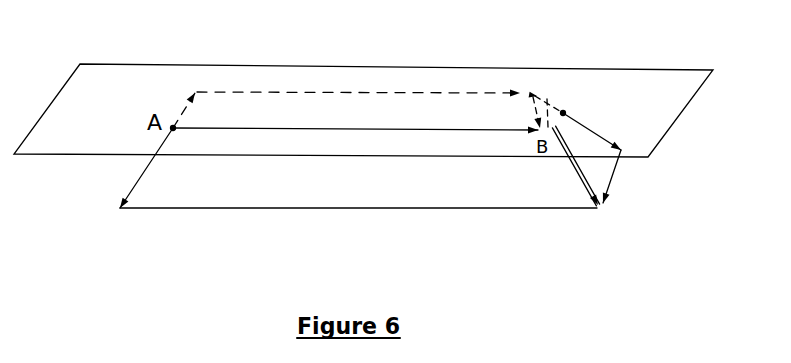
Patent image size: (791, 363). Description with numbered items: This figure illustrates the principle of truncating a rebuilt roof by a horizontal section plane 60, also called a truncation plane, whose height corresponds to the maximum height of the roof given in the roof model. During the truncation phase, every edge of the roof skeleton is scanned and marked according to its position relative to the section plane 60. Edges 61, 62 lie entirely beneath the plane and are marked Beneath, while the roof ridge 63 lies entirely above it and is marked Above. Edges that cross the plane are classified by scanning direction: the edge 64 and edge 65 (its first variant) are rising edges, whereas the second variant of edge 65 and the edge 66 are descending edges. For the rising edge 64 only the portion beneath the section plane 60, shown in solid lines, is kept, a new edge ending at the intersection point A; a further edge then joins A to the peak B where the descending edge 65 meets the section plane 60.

The section plane 60 is at (688, 107).
The edge 61 is at (465, 210).
The edge 62 is at (612, 183).
The roof ridge 63 is at (408, 92).
The rising edge 64 is at (140, 177).
The edge 65 is at (545, 180).
The descending edge 66 is at (583, 118).